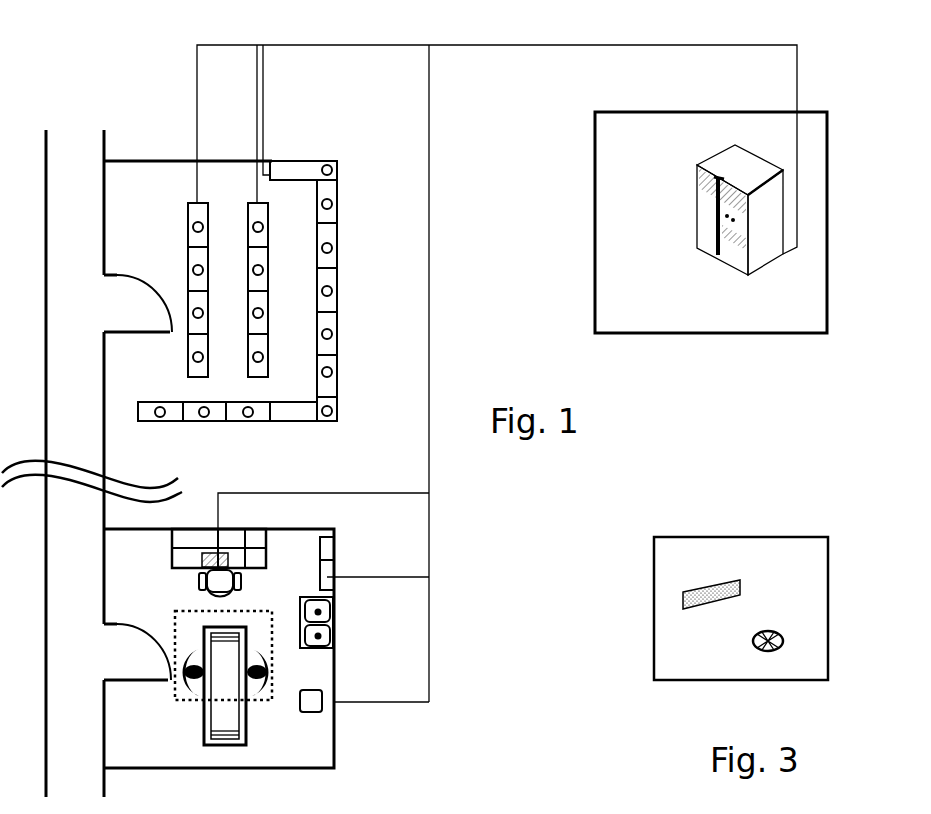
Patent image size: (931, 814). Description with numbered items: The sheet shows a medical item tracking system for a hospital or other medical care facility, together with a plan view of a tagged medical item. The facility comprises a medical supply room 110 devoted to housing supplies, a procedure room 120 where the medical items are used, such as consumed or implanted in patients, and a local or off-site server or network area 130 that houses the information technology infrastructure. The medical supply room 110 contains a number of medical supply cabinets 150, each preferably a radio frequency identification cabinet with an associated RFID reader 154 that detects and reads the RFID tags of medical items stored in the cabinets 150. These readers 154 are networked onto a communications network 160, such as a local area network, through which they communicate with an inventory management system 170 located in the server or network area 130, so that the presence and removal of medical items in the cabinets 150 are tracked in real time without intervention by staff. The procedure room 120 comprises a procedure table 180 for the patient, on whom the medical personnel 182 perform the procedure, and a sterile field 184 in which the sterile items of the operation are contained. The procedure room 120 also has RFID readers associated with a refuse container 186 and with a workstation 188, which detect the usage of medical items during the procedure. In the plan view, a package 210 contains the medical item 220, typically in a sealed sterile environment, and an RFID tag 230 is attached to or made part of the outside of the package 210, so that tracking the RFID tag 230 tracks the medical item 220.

In FIG. 1, the medical supply room 110 is at (157, 161).
In FIG. 1, the procedure room 120 is at (334, 545).
In FIG. 1, the server or network area 130 is at (637, 333).
In FIG. 1, the medical supply cabinet 150 is at (337, 190).
In FIG. 1, the RFID reader 154 is at (195, 230).
In FIG. 1, the communications network 160 is at (329, 45).
In FIG. 1, the inventory management system 170 is at (697, 225).
In FIG. 1, the procedure table 180 is at (245, 712).
In FIG. 1, the medical personnel 182 is at (178, 698).
In FIG. 1, the sterile field 184 is at (263, 700).
In FIG. 1, the refuse container 186 is at (308, 697).
In FIG. 1, the workstation 188 is at (228, 542).
In FIG. 3, the package 210 is at (705, 537).
In FIG. 3, the medical item 220 is at (741, 588).
In FIG. 3, the RFID tag 230 is at (768, 652).